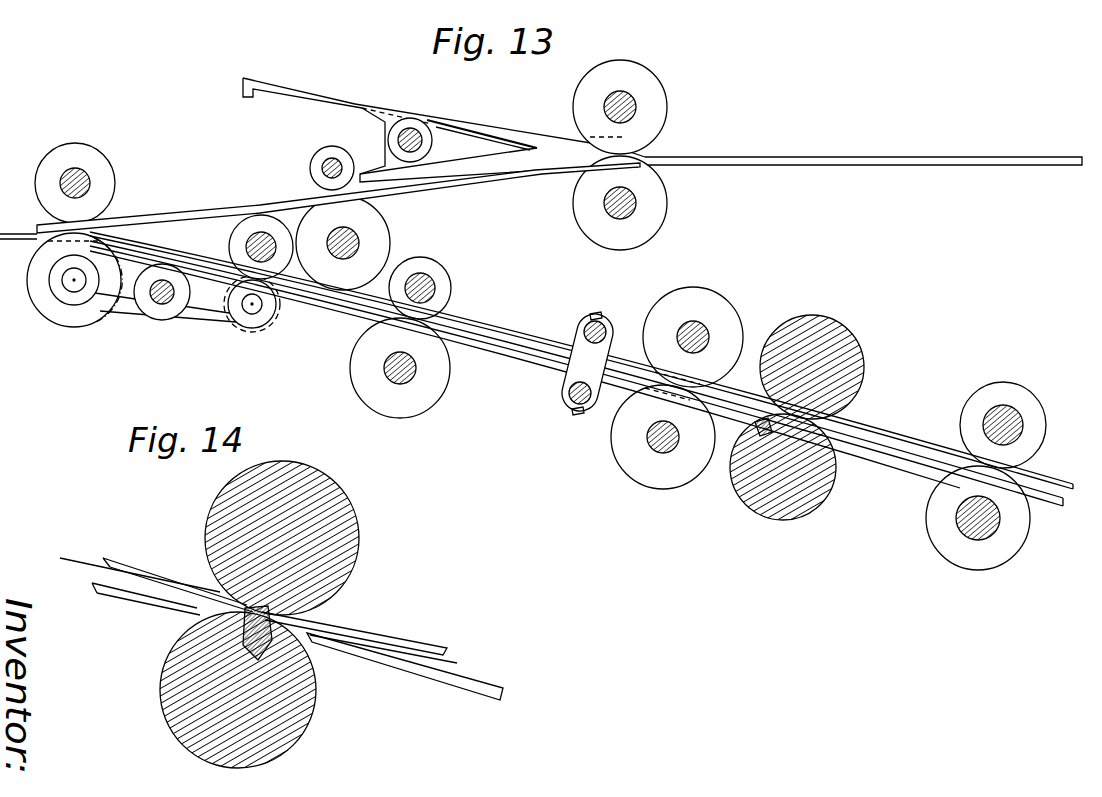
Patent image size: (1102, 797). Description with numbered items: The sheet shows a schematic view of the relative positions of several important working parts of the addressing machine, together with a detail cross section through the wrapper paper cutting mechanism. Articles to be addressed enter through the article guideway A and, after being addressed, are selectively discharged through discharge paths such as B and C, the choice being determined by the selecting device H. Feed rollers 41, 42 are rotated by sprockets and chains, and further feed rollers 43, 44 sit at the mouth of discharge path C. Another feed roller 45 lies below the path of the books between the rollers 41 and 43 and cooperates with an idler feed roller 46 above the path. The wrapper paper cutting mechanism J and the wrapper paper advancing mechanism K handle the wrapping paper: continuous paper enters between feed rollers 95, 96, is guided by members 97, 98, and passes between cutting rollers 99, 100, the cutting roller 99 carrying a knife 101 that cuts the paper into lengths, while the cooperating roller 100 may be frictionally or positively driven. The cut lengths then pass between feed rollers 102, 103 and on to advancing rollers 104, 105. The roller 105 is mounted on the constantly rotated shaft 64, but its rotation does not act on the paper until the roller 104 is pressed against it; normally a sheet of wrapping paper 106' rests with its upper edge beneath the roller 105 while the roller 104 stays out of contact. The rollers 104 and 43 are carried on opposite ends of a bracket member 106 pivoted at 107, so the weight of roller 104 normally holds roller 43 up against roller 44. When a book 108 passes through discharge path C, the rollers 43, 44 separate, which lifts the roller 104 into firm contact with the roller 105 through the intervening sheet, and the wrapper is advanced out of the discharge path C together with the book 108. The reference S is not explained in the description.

In FIG. 13, the feed roller 41 is at (660, 215).
In FIG. 13, the feed roller 42 is at (653, 84).
In FIG. 13, the feed roller 43 is at (42, 300).
In FIG. 13, the feed roller 44 is at (60, 158).
In FIG. 13, the feed roller 45 is at (392, 232).
In FIG. 13, the idler feed roller 46 is at (317, 147).
In FIG. 13, the shaft 64 is at (253, 257).
In FIG. 13, the feed roller 95 is at (1022, 526).
In FIG. 13, the feed roller 96 is at (1045, 428).
In FIG. 13, the guide member 97 is at (867, 452).
In FIG. 14, the guide member 97 is at (422, 676).
In FIG. 13, the guide member 98 is at (878, 426).
In FIG. 14, the guide member 98 is at (425, 638).
In FIG. 13, the cutting roller 99 is at (827, 501).
In FIG. 14, the cutting roller 99 is at (313, 711).
In FIG. 13, the cooperating cutting roller 100 is at (866, 375).
In FIG. 14, the cooperating cutting roller 100 is at (358, 553).
In FIG. 14, the knife 101 is at (242, 628).
In FIG. 13, the feed roller 102 is at (693, 476).
In FIG. 13, the feed roller 103 is at (740, 317).
In FIG. 13, the advancing roller 104 is at (267, 316).
In FIG. 13, the advancing roller 105 is at (300, 244).
In FIG. 13, the bracket member 106 is at (165, 329).
In FIG. 13, the sheet of wrapping paper 106' is at (581, 369).
In FIG. 13, the pivot 107 is at (163, 304).
In FIG. 13, the book 108 is at (190, 212).
In FIG. 13, the article guideway A is at (1088, 137).
In FIG. 13, the discharge path B is at (278, 74).
In FIG. 13, the discharge path C is at (27, 224).
In FIG. 13, the selecting device H is at (540, 135).
In FIG. 13, the wrapper paper cutting mechanism J is at (862, 334).
In FIG. 14, the wrapper paper cutting mechanism J is at (362, 506).
In FIG. 13, the wrapper paper advancing mechanism K is at (668, 290).
In FIG. 13, the product S is at (1074, 494).